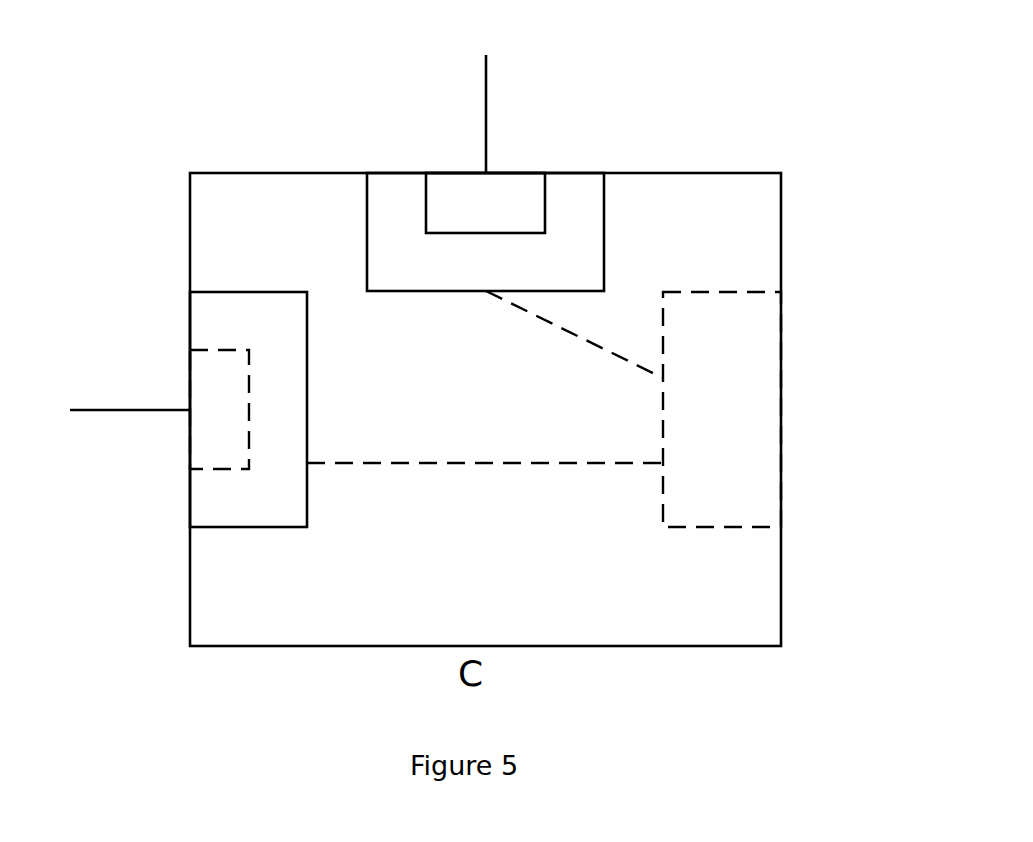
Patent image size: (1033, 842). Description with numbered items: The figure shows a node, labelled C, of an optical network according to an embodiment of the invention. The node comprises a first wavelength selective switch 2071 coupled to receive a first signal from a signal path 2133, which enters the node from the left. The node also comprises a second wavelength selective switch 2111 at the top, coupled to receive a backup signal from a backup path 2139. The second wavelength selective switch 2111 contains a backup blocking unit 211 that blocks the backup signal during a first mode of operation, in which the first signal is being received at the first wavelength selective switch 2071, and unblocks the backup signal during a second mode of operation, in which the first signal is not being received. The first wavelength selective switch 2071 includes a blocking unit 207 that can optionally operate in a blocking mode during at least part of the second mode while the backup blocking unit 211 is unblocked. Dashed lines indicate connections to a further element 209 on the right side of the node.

The backup blocking unit 211 is at (456, 192).
The second wavelength selective switch 2111 is at (575, 192).
The backup path 2139 is at (487, 80).
The blocking unit 207 is at (208, 380).
The first wavelength selective switch 2071 is at (213, 497).
The signal path 2133 is at (122, 410).
The right dashed block 209 is at (762, 510).